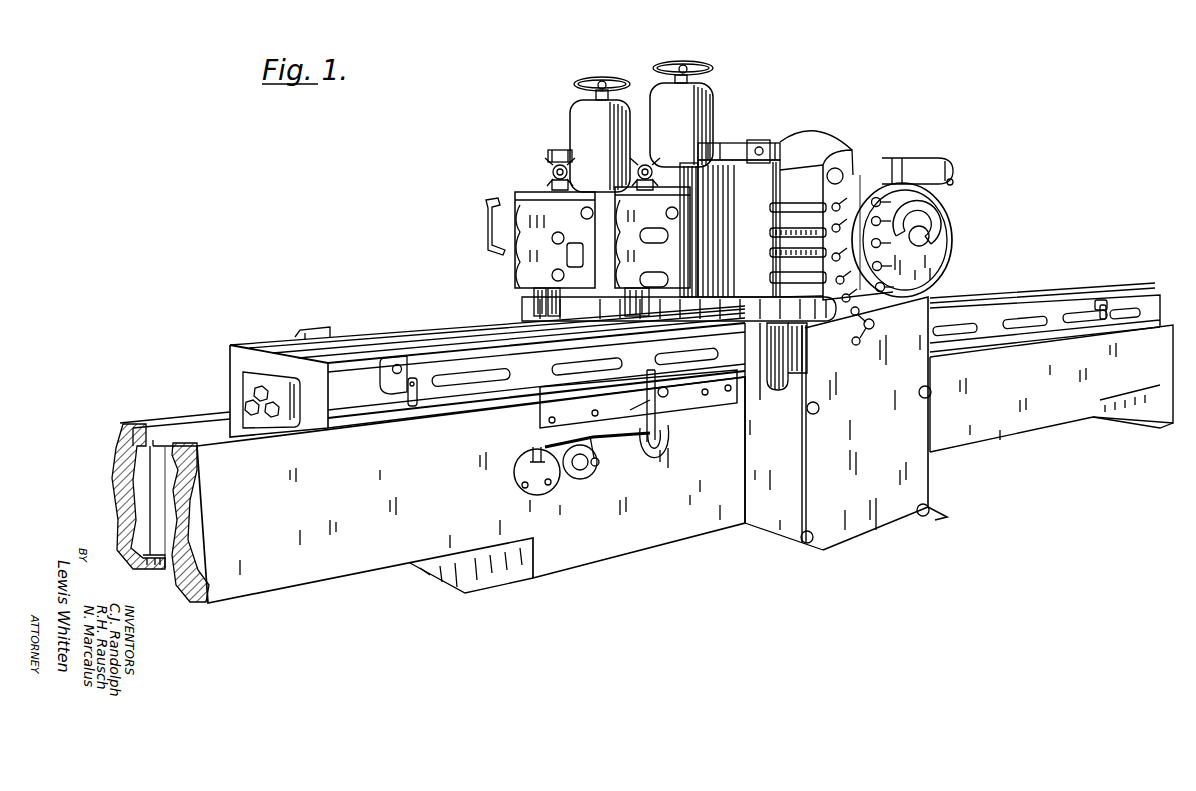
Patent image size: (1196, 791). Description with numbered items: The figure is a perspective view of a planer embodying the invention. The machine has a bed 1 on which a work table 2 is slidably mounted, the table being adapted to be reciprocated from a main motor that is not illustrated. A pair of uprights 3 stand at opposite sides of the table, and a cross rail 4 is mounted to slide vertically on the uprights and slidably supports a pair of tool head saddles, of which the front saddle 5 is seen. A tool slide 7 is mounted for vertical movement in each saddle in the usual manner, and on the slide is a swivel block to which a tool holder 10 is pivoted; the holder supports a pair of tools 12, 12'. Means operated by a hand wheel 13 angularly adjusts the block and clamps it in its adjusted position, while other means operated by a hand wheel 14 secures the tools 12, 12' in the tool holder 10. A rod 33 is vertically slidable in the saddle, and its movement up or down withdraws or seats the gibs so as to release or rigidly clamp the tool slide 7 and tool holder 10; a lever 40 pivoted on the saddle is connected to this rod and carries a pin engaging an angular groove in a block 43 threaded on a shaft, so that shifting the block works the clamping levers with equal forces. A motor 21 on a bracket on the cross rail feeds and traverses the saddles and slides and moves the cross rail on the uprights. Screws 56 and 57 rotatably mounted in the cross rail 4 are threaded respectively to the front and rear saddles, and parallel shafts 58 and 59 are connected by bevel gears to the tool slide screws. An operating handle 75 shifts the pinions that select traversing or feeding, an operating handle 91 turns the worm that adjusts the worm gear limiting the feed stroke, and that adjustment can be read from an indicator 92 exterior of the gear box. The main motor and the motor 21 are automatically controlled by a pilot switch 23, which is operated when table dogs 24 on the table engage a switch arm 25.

The bed 1 is at (583, 558).
The work table 2 is at (432, 326).
The uprights 3 is at (912, 465).
The cross rail 4 is at (818, 165).
The tool head saddle 5 is at (772, 186).
The tool slide 7 is at (588, 115).
The tool holder 10 is at (520, 270).
The tool 12 is at (518, 300).
The tool 12' is at (569, 306).
The hand wheel 13 is at (574, 168).
The hand wheel 14 is at (530, 198).
The motor 21 is at (946, 165).
The pilot switch 23 is at (510, 475).
The table dogs 24 is at (418, 410).
The switch arm 25 is at (640, 385).
The rod 33 is at (688, 165).
The lever 40 is at (742, 145).
The block 43 is at (560, 152).
The screw 56 is at (772, 255).
The screw 57 is at (772, 233).
The shaft 58 is at (772, 279).
The shaft 59 is at (772, 209).
The operating handle 75 is at (853, 318).
The operating handle 91 is at (858, 346).
The indicator 92 is at (928, 243).